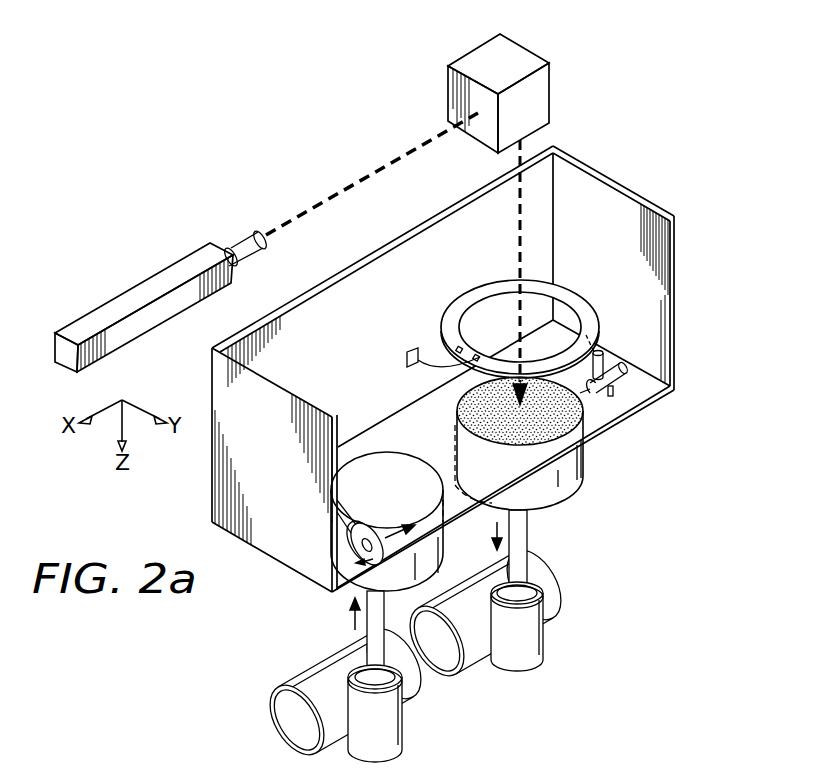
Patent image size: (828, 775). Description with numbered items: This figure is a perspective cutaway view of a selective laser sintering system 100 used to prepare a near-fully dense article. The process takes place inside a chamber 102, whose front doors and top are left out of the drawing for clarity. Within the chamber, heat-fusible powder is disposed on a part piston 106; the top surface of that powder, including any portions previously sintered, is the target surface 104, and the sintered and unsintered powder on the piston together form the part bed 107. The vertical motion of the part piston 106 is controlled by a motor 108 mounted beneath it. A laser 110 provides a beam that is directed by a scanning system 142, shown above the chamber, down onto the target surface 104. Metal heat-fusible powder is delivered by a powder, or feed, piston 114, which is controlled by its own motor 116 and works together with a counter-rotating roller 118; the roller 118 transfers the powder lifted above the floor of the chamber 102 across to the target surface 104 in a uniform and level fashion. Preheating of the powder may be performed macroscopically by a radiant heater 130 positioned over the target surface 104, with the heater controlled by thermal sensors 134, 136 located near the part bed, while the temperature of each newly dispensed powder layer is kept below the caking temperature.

The selective laser sintering system 100 is at (708, 335).
The chamber 102 is at (634, 197).
The target surface 104 is at (458, 398).
The part piston 106 is at (583, 483).
The part bed 107 is at (468, 456).
The motor 108 is at (545, 635).
The laser 110 is at (127, 298).
The powder piston 114 is at (353, 590).
The motor 116 is at (400, 722).
The counter-rotating roller 118 is at (365, 512).
The radiant heater 130 is at (457, 305).
The thermal sensor 134 is at (623, 373).
The thermal sensor 136 is at (607, 360).
The scanning system 142 is at (478, 57).